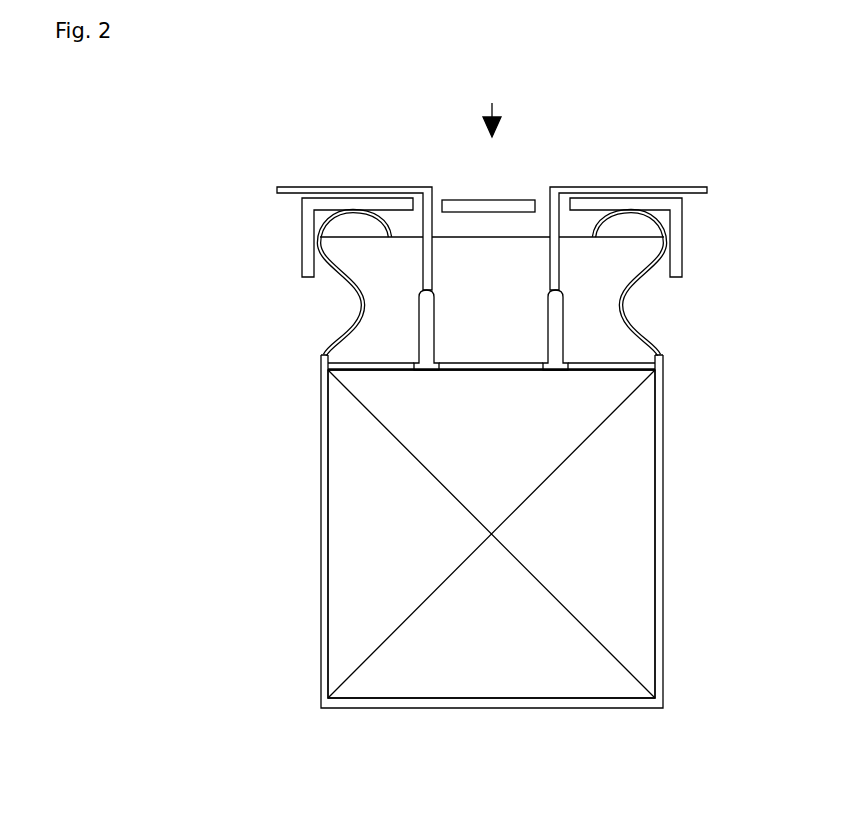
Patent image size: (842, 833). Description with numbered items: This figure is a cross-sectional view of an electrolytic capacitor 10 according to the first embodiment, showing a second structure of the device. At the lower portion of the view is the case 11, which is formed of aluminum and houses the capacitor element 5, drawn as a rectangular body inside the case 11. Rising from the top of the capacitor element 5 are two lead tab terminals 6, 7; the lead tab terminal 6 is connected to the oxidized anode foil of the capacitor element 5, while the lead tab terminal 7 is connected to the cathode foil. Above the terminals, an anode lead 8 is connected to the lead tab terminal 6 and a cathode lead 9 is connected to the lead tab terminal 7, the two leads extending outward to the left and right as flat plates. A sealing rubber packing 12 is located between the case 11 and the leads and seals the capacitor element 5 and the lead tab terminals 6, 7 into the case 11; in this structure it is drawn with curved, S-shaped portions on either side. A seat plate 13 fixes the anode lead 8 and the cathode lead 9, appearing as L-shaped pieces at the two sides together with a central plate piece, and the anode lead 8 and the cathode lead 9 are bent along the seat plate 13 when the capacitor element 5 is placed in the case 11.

The electrolytic capacitor 10 is at (505, 50).
The capacitor element 5 is at (343, 537).
The lead tab terminal 6 is at (419, 333).
The lead tab terminal 7 is at (563, 332).
The anode lead 8 is at (288, 191).
The cathode lead 9 is at (645, 190).
The case 11 is at (658, 523).
The sealing rubber packing 12 is at (597, 285).
The seat plate 13 is at (307, 235).